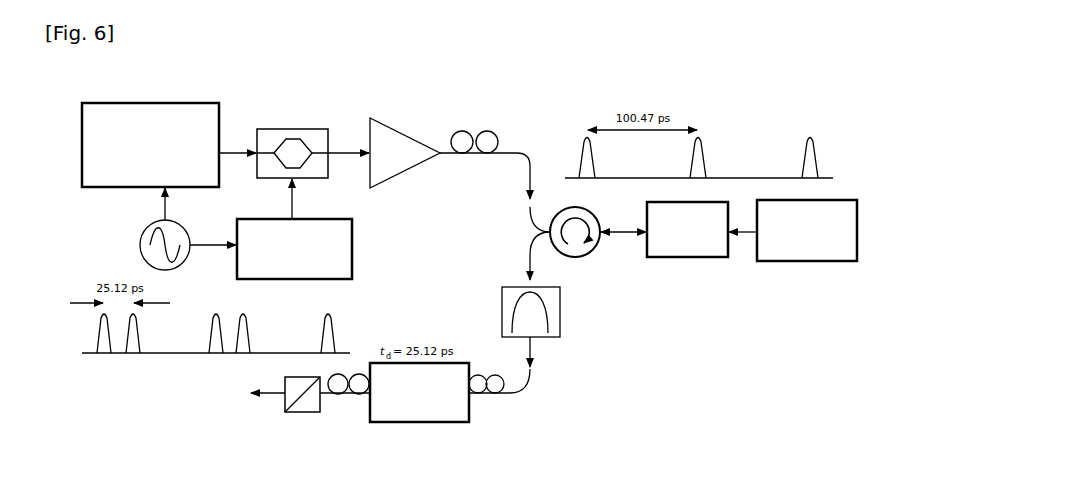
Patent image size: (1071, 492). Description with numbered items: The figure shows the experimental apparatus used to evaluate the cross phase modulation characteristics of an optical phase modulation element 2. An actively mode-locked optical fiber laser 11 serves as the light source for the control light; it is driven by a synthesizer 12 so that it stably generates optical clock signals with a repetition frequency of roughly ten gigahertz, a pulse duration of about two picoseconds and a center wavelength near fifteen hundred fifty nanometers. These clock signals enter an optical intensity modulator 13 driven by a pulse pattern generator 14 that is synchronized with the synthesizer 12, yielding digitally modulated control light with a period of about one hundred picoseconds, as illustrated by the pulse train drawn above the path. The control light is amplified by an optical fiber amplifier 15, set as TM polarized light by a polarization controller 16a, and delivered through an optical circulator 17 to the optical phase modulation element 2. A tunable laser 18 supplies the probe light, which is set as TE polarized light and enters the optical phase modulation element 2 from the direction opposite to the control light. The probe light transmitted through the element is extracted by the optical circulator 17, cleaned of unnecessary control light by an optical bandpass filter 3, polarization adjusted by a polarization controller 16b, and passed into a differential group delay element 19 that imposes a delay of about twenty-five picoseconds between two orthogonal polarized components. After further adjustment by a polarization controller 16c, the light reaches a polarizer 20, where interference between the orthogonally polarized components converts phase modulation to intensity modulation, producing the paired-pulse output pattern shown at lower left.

The actively mode-locked optical fiber laser 11 is at (170, 103).
The synthesizer 12 is at (143, 244).
The optical intensity modulator 13 is at (295, 129).
The pulse pattern generator 14 is at (352, 228).
The optical fiber amplifier 15 is at (390, 125).
The polarization controller 16a is at (475, 155).
The polarization controller 16b is at (477, 397).
The polarization controller 16c is at (348, 395).
The optical circulator 17 is at (578, 257).
The optical phase modulation element 2 is at (690, 257).
The tunable laser 18 is at (803, 261).
The optical bandpass filter 3 is at (502, 310).
The differential group delay element 19 is at (413, 422).
The polarizer 20 is at (298, 412).